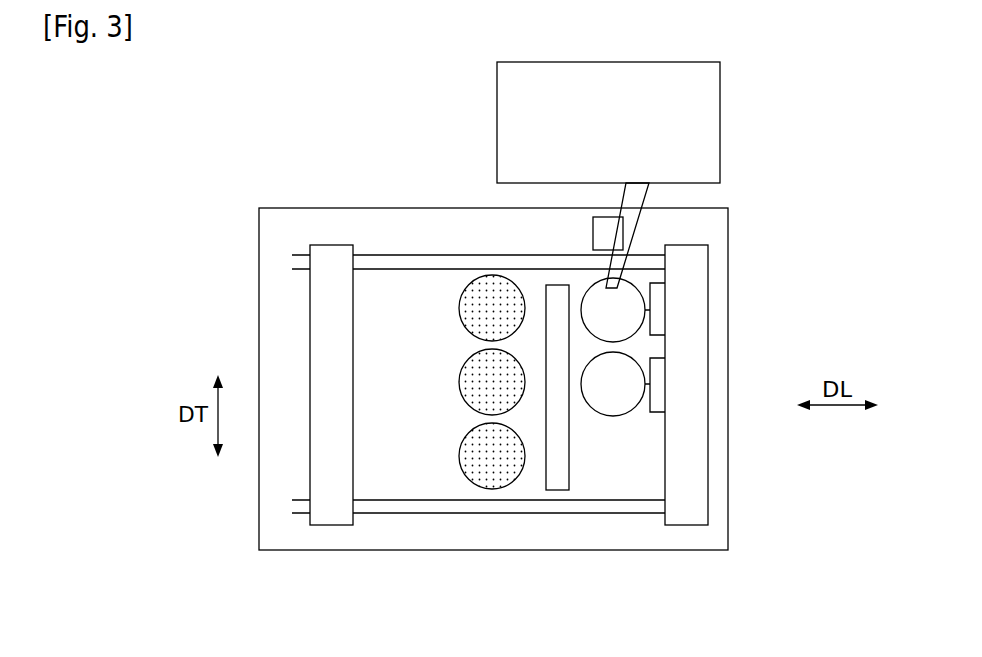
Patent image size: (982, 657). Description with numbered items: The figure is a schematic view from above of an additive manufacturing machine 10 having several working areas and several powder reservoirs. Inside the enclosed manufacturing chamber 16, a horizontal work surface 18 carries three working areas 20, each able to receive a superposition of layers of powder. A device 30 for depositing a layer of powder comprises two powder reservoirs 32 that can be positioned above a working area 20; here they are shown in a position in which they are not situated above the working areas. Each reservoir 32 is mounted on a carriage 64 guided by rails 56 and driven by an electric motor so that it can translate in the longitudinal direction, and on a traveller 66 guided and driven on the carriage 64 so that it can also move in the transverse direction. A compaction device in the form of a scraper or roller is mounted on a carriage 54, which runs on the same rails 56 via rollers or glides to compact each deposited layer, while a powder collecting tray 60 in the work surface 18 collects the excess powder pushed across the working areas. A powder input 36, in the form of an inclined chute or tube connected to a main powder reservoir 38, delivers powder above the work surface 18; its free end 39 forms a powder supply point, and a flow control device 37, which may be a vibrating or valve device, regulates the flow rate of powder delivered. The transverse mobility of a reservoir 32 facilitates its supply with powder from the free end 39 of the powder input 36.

The additive manufacturing machine 10 is at (768, 108).
The manufacturing chamber 16 is at (728, 248).
The work surface 18 is at (430, 478).
The working area 20 is at (472, 370).
The device for depositing a layer of powder 30 is at (678, 537).
The powder reservoir 32 is at (630, 338).
The powder input 36 is at (625, 232).
The flow control device 37 is at (603, 232).
The main powder reservoir 38 is at (515, 90).
The free end 39 is at (622, 292).
The carriage 54 is at (333, 307).
The rails 56 is at (388, 255).
The powder collecting tray 60 is at (557, 480).
The carriage 64 is at (697, 483).
The traveller 66 is at (657, 395).